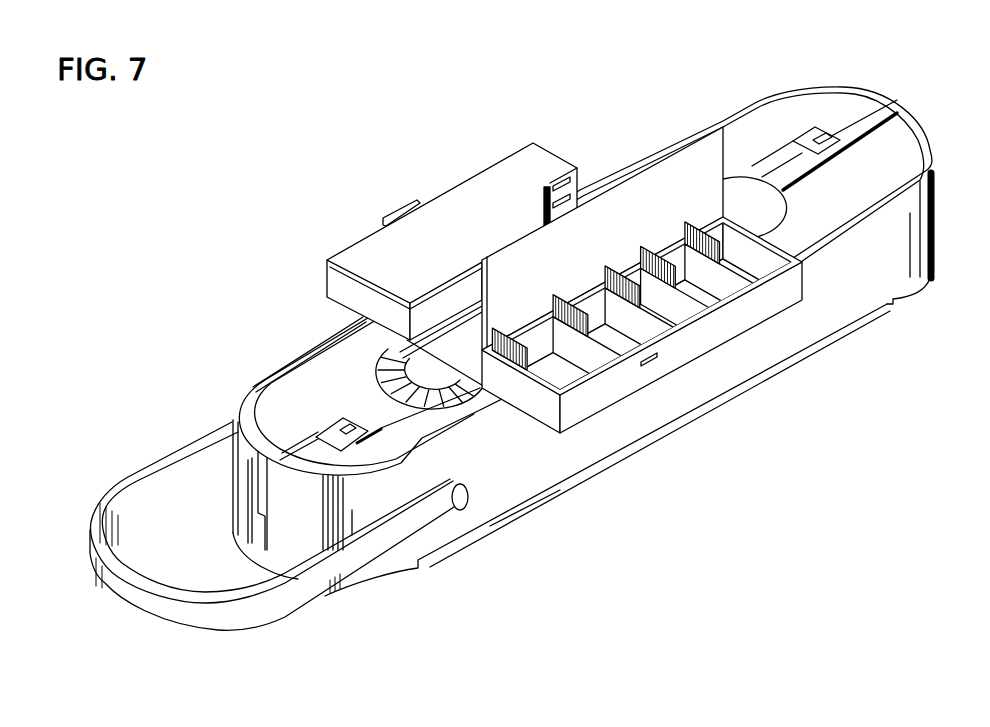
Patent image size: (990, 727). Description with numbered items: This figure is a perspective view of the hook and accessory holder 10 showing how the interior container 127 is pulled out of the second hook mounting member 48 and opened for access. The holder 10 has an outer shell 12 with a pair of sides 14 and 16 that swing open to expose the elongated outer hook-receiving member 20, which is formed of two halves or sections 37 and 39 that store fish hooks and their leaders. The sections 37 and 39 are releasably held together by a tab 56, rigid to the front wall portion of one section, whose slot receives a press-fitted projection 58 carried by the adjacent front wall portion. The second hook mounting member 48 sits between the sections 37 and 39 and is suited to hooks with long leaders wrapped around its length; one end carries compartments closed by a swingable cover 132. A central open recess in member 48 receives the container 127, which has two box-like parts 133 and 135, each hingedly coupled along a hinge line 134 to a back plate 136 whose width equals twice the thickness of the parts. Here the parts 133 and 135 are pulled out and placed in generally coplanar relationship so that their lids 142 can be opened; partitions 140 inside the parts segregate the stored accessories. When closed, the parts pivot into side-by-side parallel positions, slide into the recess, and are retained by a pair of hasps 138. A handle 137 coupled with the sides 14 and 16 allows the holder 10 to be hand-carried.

The hook and accessory holder 10 is at (705, 421).
The outer shell 12 is at (938, 247).
The side 14 is at (530, 484).
The side 16 is at (270, 372).
The first or outer hook-receiving member 20 is at (916, 172).
The section 37 is at (460, 418).
The section 39 is at (360, 350).
The second hook mounting member 48 is at (743, 177).
The tab 56 is at (806, 139).
The projection 58 is at (833, 146).
The container 127 is at (449, 232).
The swingable cover 132 is at (390, 360).
The box-like part 133 is at (358, 238).
The hinge line 134 is at (452, 324).
The box-like part 135 is at (675, 325).
The back plate 136 is at (471, 363).
The handle 137 is at (287, 603).
The hasp 138 is at (388, 218).
The partition 140 is at (593, 312).
The lid 142 is at (542, 160).